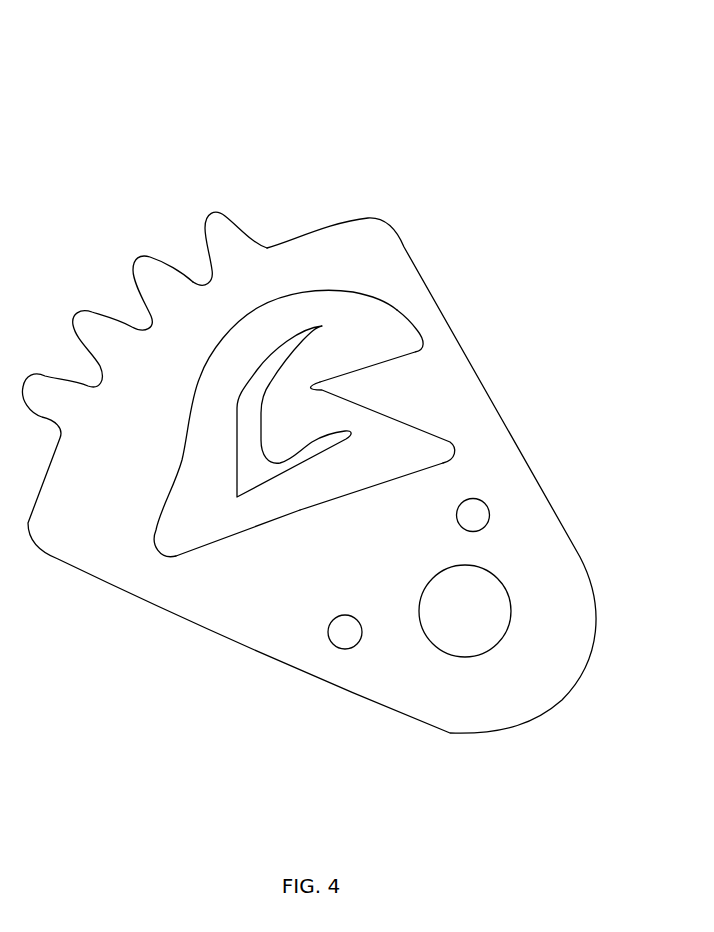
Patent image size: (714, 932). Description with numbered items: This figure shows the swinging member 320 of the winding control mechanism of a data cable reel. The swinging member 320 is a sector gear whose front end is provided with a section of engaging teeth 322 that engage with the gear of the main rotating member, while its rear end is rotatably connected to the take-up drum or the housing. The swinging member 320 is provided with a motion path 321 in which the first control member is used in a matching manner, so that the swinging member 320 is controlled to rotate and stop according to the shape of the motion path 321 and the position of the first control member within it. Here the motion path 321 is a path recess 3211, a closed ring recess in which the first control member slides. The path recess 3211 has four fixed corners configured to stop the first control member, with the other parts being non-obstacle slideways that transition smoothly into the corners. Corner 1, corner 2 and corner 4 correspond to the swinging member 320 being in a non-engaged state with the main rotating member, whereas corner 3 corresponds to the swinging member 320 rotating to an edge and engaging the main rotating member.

The swinging member 320 is at (153, 195).
The gear tooth 322 is at (225, 235).
The motion path 321 is at (345, 492).
The path recess 3211 is at (277, 496).
The corner 1 is at (193, 533).
The corner 2 is at (412, 330).
The corner 3 is at (272, 450).
The corner 4 is at (428, 448).